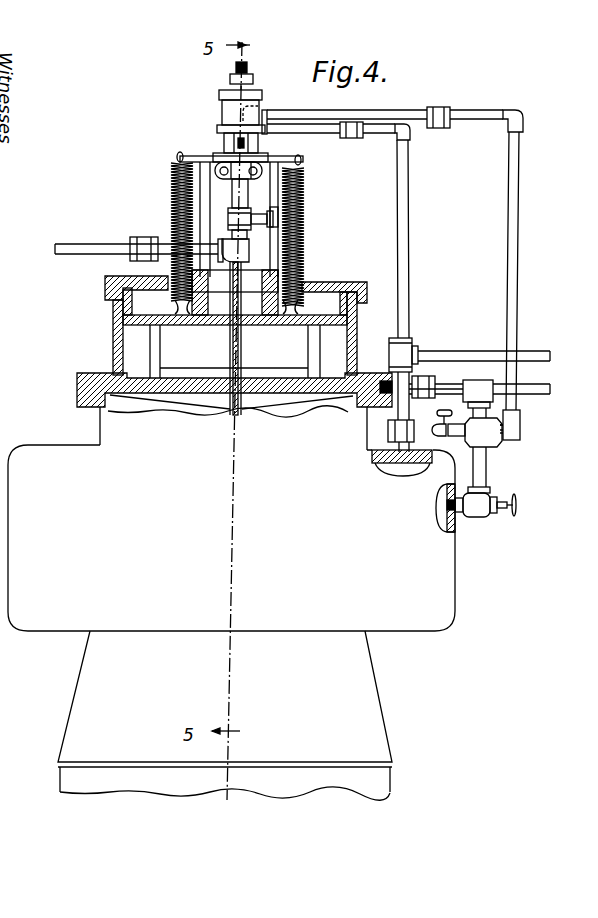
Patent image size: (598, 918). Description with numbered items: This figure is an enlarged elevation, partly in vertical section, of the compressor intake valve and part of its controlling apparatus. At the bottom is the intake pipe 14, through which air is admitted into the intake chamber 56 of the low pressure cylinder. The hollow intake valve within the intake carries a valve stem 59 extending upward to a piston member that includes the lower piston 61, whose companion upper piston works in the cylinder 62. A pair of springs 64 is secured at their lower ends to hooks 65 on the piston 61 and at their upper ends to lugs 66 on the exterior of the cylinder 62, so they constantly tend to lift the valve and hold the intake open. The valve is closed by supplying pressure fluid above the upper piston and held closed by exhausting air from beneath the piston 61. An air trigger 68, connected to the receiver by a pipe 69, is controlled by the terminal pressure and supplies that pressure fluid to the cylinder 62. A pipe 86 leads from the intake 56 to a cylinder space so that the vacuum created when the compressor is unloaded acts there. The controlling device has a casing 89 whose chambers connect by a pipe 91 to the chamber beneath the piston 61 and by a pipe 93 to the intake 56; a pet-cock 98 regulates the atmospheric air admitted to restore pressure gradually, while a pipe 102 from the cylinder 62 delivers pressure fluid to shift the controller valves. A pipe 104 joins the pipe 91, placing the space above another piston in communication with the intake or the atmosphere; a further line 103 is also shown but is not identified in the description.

The intake pipe 14 is at (380, 696).
The intake chamber 56 is at (303, 538).
The valve stem 59 is at (241, 346).
The piston 61 is at (346, 320).
The cylinder 62 is at (278, 166).
The springs 64 is at (176, 205).
The hooks 65 is at (175, 303).
The lugs 66 is at (178, 158).
The air trigger 68 is at (228, 135).
The pipe 69 is at (247, 190).
The pipe 86 is at (408, 218).
The casing 89 is at (495, 441).
The pipe 91 is at (447, 380).
The pipe 93 is at (480, 467).
The pet-cock 98 is at (448, 430).
The pipe 102 is at (512, 285).
The pipe 103 is at (531, 351).
The pipe 104 is at (524, 395).